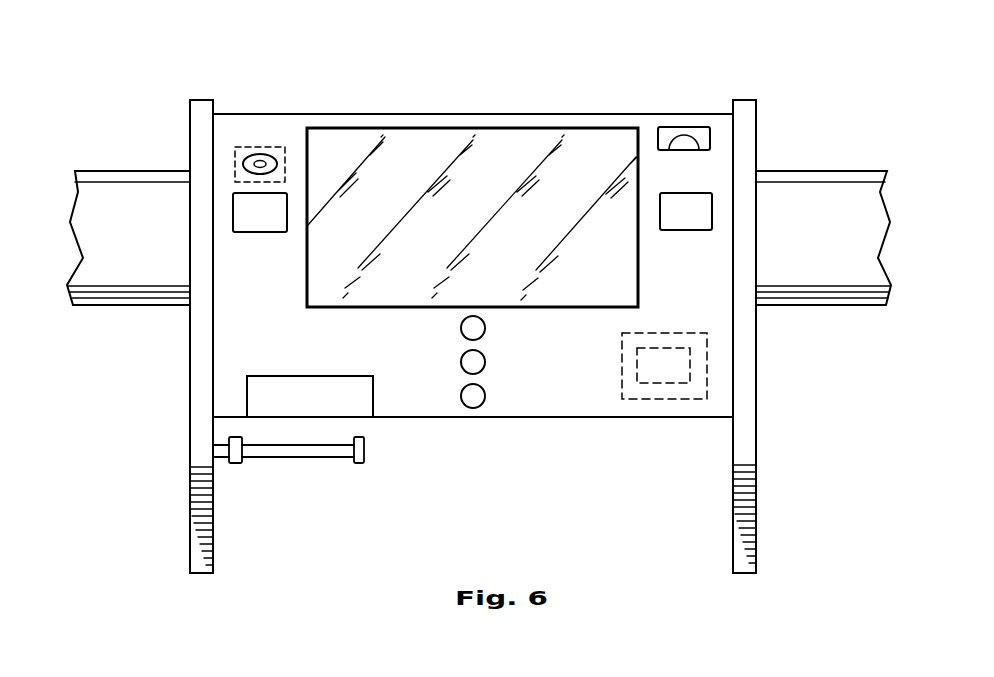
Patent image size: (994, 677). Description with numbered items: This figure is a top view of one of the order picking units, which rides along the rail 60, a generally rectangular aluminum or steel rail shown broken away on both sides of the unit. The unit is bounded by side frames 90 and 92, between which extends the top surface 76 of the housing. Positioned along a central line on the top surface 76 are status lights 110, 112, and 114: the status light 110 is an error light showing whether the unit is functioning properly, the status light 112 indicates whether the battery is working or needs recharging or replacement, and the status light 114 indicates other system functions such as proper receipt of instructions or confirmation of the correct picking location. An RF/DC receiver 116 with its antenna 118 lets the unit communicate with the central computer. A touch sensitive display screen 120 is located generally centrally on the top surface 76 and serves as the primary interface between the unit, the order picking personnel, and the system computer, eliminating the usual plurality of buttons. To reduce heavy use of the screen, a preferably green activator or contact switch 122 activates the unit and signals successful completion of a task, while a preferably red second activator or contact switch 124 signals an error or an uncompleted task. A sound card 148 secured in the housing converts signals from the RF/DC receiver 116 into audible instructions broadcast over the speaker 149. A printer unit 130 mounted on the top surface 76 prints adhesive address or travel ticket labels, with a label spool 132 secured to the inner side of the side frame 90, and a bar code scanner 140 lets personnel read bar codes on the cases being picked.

The rail 60 is at (135, 272).
The top surface 76 is at (508, 113).
The side frame 90 is at (190, 437).
The side frame 92 is at (756, 418).
The status light 110 is at (478, 330).
The status light 112 is at (463, 362).
The status light 114 is at (480, 395).
The RF/DC receiver 116 is at (277, 143).
The antenna 118 is at (263, 152).
The touch sensitive display screen 120 is at (413, 155).
The activator or contact switch 122 is at (697, 200).
The second activator or contact switch 124 is at (242, 202).
The printer unit 130 is at (260, 392).
The label spool 132 is at (298, 458).
The bar code scanner 140 is at (670, 130).
The sound card 148 is at (667, 383).
The speaker 149 is at (635, 400).